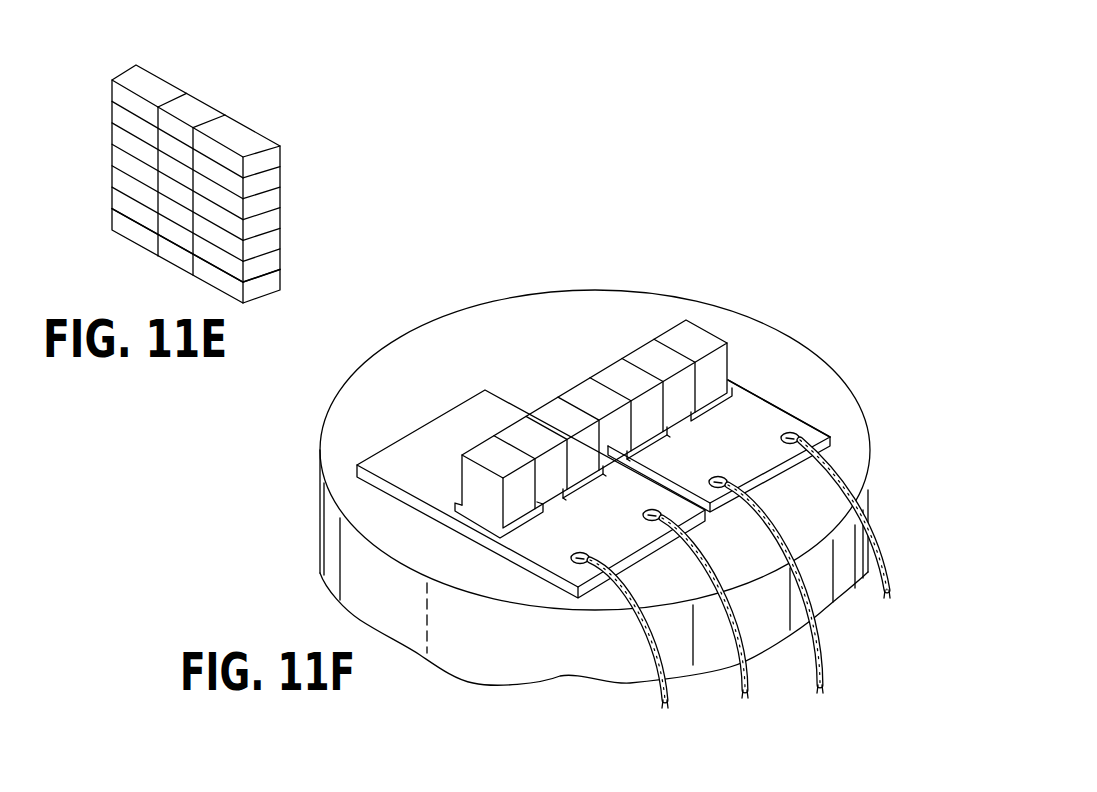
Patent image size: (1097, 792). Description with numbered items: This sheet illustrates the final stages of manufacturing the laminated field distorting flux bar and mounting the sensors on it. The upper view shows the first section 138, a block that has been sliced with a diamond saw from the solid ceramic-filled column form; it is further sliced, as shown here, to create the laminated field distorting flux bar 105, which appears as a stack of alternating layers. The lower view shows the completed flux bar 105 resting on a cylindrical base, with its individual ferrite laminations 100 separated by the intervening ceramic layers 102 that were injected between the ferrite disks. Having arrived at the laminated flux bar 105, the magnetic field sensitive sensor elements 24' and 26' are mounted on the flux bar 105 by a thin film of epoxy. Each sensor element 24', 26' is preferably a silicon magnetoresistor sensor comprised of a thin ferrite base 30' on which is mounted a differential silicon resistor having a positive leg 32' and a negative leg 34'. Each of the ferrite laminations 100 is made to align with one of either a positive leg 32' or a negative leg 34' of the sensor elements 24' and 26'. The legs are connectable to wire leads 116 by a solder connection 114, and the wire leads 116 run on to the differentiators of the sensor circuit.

In FIG. 11E, the first section 138 is at (276, 128).
In FIG. 11E, the laminated field distorting flux bar 105 is at (170, 269).
In FIG. 11F, the laminated field distorting flux bar 105 is at (719, 317).
In FIG. 11F, the ferrite lamination 100 is at (493, 453).
In FIG. 11F, the spacer layer between chips 102 is at (522, 430).
In FIG. 11F, the sensor element 24' is at (796, 367).
In FIG. 11F, the thin base 30' is at (597, 489).
In FIG. 11F, the positive leg 32' is at (573, 468).
In FIG. 11F, the negative leg 34' is at (696, 454).
In FIG. 11F, the sensor element 26' is at (595, 487).
In FIG. 11F, the solder connection 114 is at (797, 435).
In FIG. 11F, the wire lead 116 is at (822, 647).